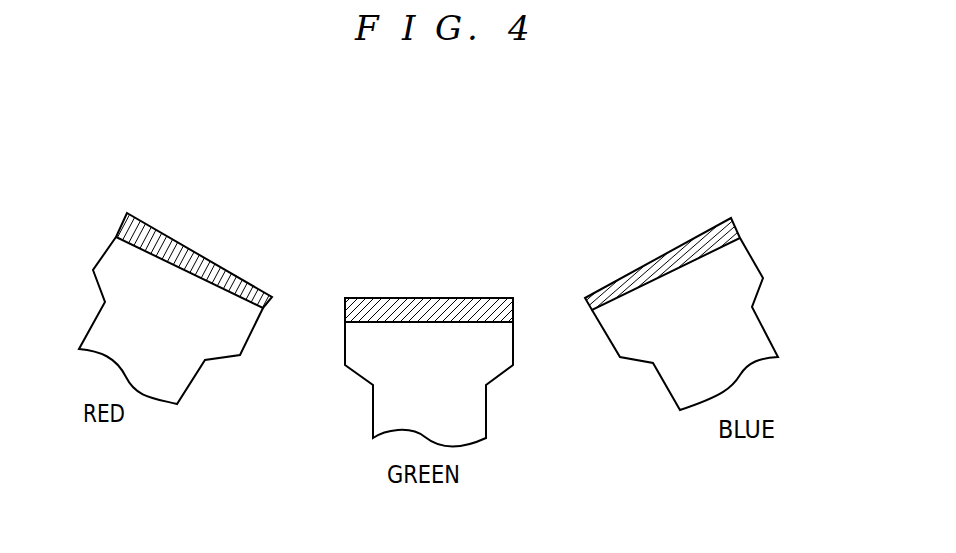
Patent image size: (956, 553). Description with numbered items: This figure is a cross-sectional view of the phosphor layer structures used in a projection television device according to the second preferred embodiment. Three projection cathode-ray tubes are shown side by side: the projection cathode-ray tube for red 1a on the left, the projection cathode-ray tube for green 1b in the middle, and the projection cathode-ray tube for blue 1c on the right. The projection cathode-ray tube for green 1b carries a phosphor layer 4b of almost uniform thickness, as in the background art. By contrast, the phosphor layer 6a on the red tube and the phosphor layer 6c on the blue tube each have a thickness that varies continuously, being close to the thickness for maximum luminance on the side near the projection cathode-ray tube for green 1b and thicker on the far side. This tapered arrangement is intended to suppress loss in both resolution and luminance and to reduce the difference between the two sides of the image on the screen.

The phosphor layer 6a is at (200, 250).
The projection cathode-ray tube for red 1a is at (213, 352).
The phosphor layer 4b is at (428, 298).
The projection cathode-ray tube for green 1b is at (480, 353).
The phosphor layer 6c is at (657, 255).
The projection cathode-ray tube for blue 1c is at (750, 287).